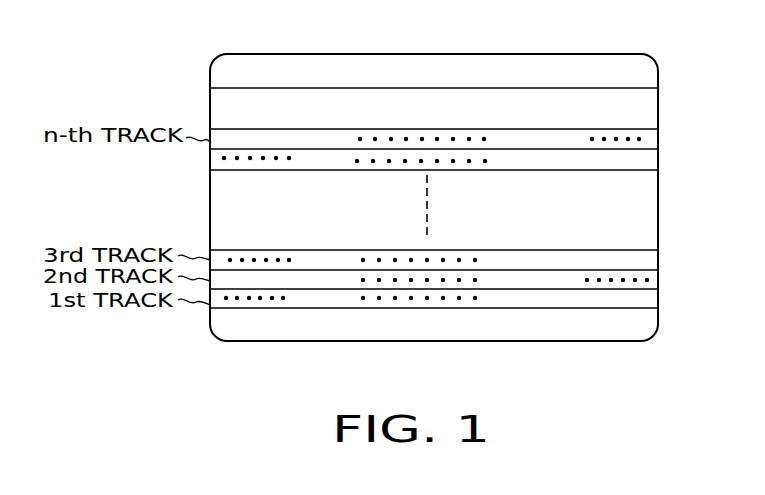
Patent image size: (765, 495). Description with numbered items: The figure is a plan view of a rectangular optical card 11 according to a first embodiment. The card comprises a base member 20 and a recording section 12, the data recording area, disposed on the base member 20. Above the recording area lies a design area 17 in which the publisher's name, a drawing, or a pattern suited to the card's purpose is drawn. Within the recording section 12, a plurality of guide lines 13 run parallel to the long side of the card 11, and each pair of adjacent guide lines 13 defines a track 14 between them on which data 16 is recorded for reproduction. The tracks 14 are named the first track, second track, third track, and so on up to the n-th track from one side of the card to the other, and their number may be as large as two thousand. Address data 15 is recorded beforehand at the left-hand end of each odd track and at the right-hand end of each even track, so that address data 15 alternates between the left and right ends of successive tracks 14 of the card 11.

The optical card 11 is at (456, 55).
The recording section 12 is at (677, 312).
The guide lines 13 is at (473, 269).
The track 14 is at (658, 262).
The address data 15 is at (266, 157).
The data 16 is at (418, 141).
The design area 17 is at (630, 100).
The base member 20 is at (212, 78).